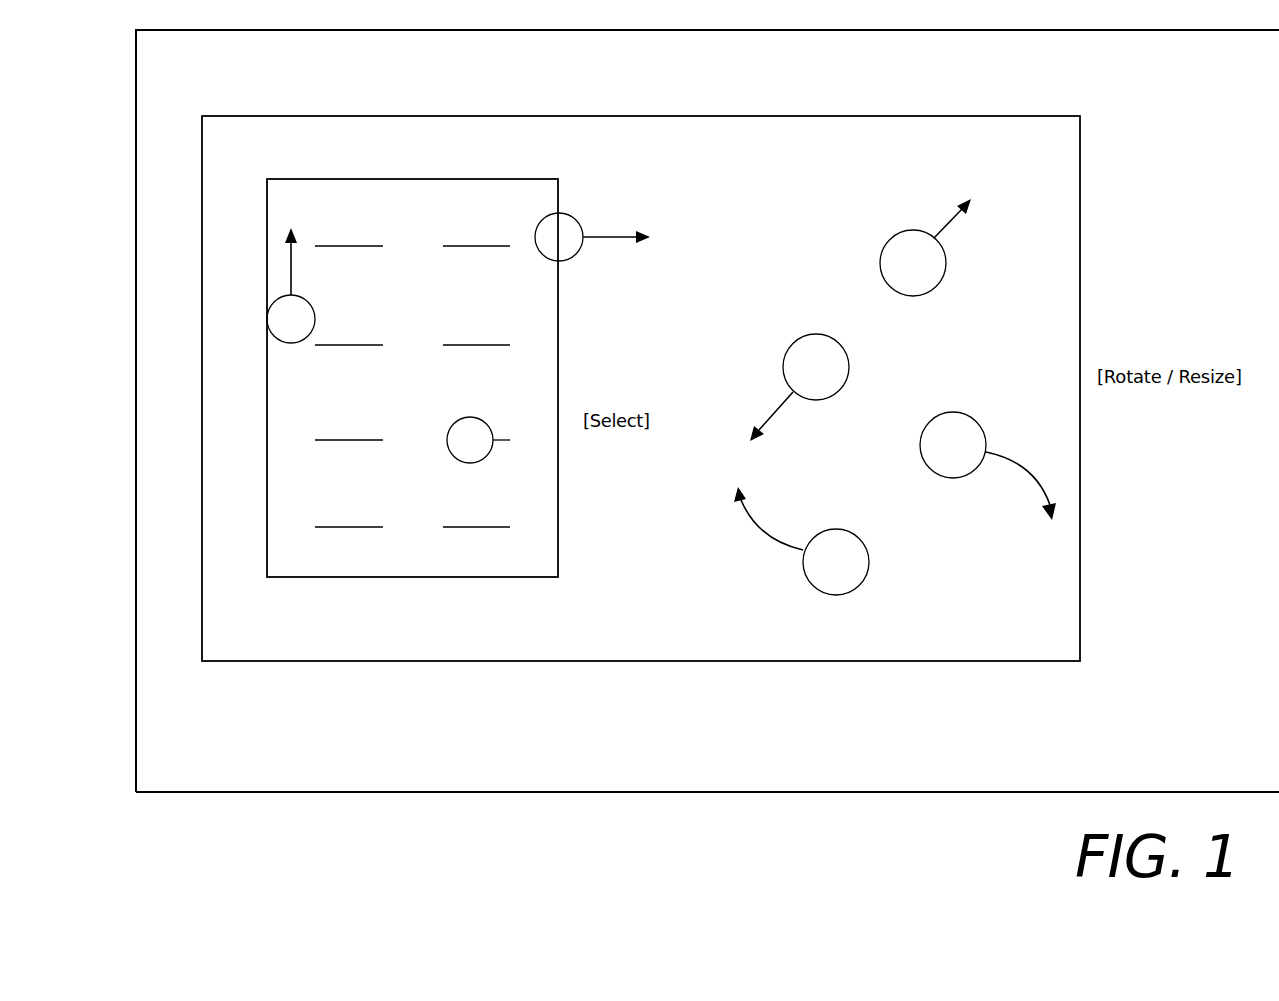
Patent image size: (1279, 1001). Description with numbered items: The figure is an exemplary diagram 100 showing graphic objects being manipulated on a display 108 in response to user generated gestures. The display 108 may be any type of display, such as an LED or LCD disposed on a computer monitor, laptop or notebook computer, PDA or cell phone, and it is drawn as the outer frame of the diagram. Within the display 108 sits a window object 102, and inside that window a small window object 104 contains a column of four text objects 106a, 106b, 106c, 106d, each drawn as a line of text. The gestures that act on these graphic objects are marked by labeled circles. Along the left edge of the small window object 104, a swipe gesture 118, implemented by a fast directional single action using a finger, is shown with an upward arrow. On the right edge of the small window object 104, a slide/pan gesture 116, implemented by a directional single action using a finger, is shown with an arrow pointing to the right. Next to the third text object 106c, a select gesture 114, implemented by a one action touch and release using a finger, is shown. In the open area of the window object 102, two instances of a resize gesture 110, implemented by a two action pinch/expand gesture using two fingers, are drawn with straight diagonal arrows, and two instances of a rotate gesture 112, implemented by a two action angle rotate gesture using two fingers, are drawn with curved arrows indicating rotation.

The diagram 100 is at (363, 752).
The window object 102 is at (917, 116).
The small window object 104 is at (495, 179).
The text object 106a is at (414, 220).
The text object 106b is at (414, 306).
The text object 106c is at (412, 408).
The text object 106d is at (407, 502).
The display 108 is at (1123, 30).
The resize gesture 110 is at (937, 285).
The rotate gesture 112 is at (963, 414).
The select gesture 114 is at (490, 425).
The slide/pan gesture 116 is at (575, 255).
The swipe gesture 118 is at (300, 341).